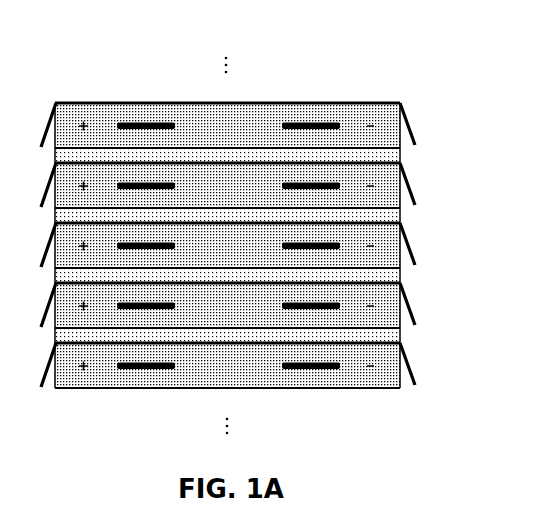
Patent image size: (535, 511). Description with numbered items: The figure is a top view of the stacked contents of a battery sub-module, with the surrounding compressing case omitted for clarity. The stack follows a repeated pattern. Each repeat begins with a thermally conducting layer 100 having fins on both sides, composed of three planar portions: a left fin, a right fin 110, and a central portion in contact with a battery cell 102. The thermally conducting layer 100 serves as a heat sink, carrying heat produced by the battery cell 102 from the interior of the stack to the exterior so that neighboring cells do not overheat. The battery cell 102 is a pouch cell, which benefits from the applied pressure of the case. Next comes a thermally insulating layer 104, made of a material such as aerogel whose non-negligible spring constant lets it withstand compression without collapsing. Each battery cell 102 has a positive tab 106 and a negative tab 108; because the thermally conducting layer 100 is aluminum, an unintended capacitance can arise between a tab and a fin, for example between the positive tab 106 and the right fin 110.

The thermally conducting layer 100 is at (78, 100).
The battery cell 102 is at (258, 117).
The thermally insulating layer 104 is at (398, 158).
The positive tab 106 is at (138, 122).
The negative tab 108 is at (317, 123).
The right fin 110 is at (408, 119).